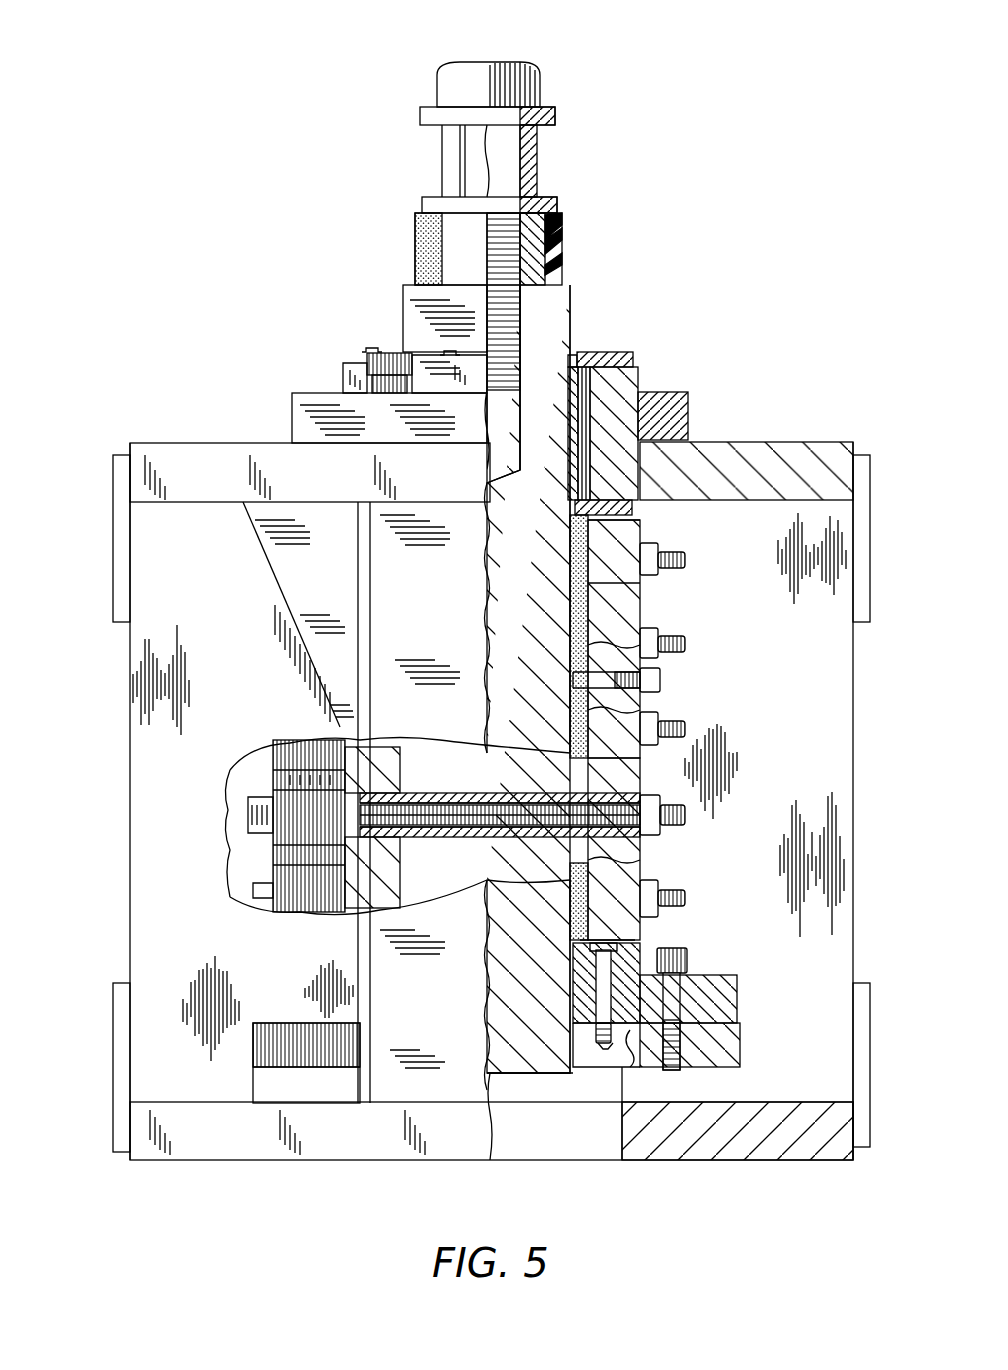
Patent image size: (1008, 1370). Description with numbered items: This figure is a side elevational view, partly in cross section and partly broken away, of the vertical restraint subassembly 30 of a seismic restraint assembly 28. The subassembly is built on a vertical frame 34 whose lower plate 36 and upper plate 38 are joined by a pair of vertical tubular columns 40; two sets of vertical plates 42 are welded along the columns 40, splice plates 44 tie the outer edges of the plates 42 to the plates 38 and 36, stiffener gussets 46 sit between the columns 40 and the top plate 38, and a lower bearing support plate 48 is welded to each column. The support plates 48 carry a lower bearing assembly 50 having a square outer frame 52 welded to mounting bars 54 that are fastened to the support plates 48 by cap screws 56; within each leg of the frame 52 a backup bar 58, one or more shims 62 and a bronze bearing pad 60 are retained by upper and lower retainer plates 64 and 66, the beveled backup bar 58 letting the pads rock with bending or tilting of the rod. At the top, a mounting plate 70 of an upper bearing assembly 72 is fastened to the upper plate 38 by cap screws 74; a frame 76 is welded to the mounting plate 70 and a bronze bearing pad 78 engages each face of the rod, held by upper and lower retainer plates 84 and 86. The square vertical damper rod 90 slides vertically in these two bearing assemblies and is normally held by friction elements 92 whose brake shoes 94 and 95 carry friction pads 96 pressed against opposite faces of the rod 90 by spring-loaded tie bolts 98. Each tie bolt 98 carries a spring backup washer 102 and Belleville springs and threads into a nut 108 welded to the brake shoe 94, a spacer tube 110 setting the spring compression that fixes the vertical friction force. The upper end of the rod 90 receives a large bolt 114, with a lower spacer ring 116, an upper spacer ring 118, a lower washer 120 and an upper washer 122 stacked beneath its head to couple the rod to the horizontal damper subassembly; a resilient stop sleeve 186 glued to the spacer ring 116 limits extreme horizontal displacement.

The seismic restraint assembly 28 is at (488, 802).
The vertical restraint subassembly 30 is at (118, 792).
The vertical frame 34 is at (858, 712).
The lower plate 36 is at (755, 1142).
The upper plate 38 is at (815, 445).
The vertical tubular columns 40 is at (448, 621).
The vertical plates 42 is at (256, 709).
The splice plates 44 is at (120, 515).
The stiffener gussets 46 is at (290, 578).
The lower bearing support plate 48 is at (742, 1048).
The lower bearing assembly 50 is at (543, 1015).
The square outer frame 52 is at (640, 1050).
The mounting bars 54 is at (735, 985).
The cap screws 56 is at (690, 955).
The backup bar 58 is at (600, 1045).
The bronze bearing pad 60 is at (590, 1005).
The shims 62 is at (640, 940).
The upper retainer plate 64 is at (610, 950).
The lower retainer plate 66 is at (605, 1045).
The mounting plate 70 is at (680, 428).
The upper bearing assembly 72 is at (713, 404).
The cap screws 74 is at (370, 360).
The frame 76 is at (640, 380).
The bronze bearing pad 78 is at (565, 350).
The upper retainer plate 84 is at (625, 360).
The lower retainer plate 86 is at (633, 508).
The vertical damper rod 90 is at (492, 683).
The friction element 92 is at (661, 639).
The brake shoe 94 is at (635, 850).
The brake shoe 95 is at (398, 772).
The friction pad 96 is at (638, 580).
The tie bolts 98 is at (248, 812).
The spring backup washer 102 is at (270, 850).
The nut 108 is at (655, 672).
The spacer tube 110 is at (492, 832).
The bolt 114 is at (540, 80).
The lower spacer ring 116 is at (532, 250).
The upper spacer ring 118 is at (537, 160).
The lower washer 120 is at (557, 205).
The upper washer 122 is at (555, 118).
The resilient stop sleeve 186 is at (562, 262).